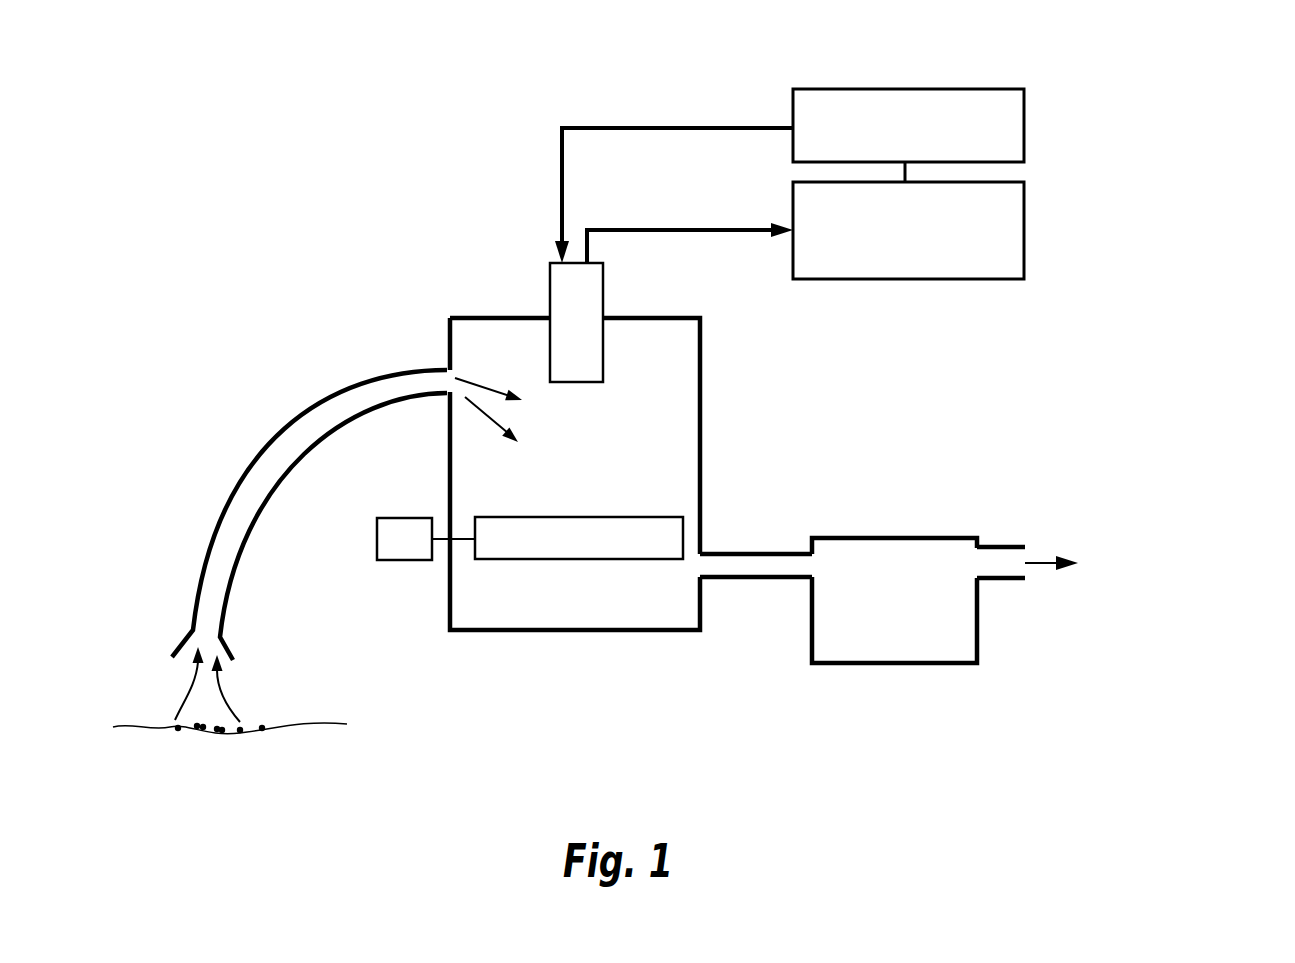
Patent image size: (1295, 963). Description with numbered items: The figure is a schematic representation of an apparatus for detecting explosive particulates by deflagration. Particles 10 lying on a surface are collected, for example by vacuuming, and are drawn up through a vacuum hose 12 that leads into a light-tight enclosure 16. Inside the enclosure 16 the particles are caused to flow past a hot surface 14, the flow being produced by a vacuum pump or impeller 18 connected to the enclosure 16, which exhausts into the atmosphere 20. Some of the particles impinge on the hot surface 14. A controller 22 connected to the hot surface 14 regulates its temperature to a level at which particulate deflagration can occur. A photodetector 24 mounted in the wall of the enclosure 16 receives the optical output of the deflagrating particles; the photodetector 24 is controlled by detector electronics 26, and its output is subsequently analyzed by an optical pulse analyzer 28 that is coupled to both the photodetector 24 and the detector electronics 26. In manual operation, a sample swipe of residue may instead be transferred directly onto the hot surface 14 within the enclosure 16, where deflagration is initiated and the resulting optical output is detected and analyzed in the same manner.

The particles 10 is at (250, 723).
The vacuum hose 12 is at (338, 449).
The hot surface 14 is at (613, 700).
The light-tight enclosure 16 is at (716, 445).
The vacuum pump or impeller 18 is at (908, 753).
The atmosphere 20 is at (1047, 567).
The controller 22 is at (410, 648).
The photodetector 24 is at (453, 248).
The detector electronics 26 is at (918, 137).
The optical pulse analyzer 28 is at (918, 244).